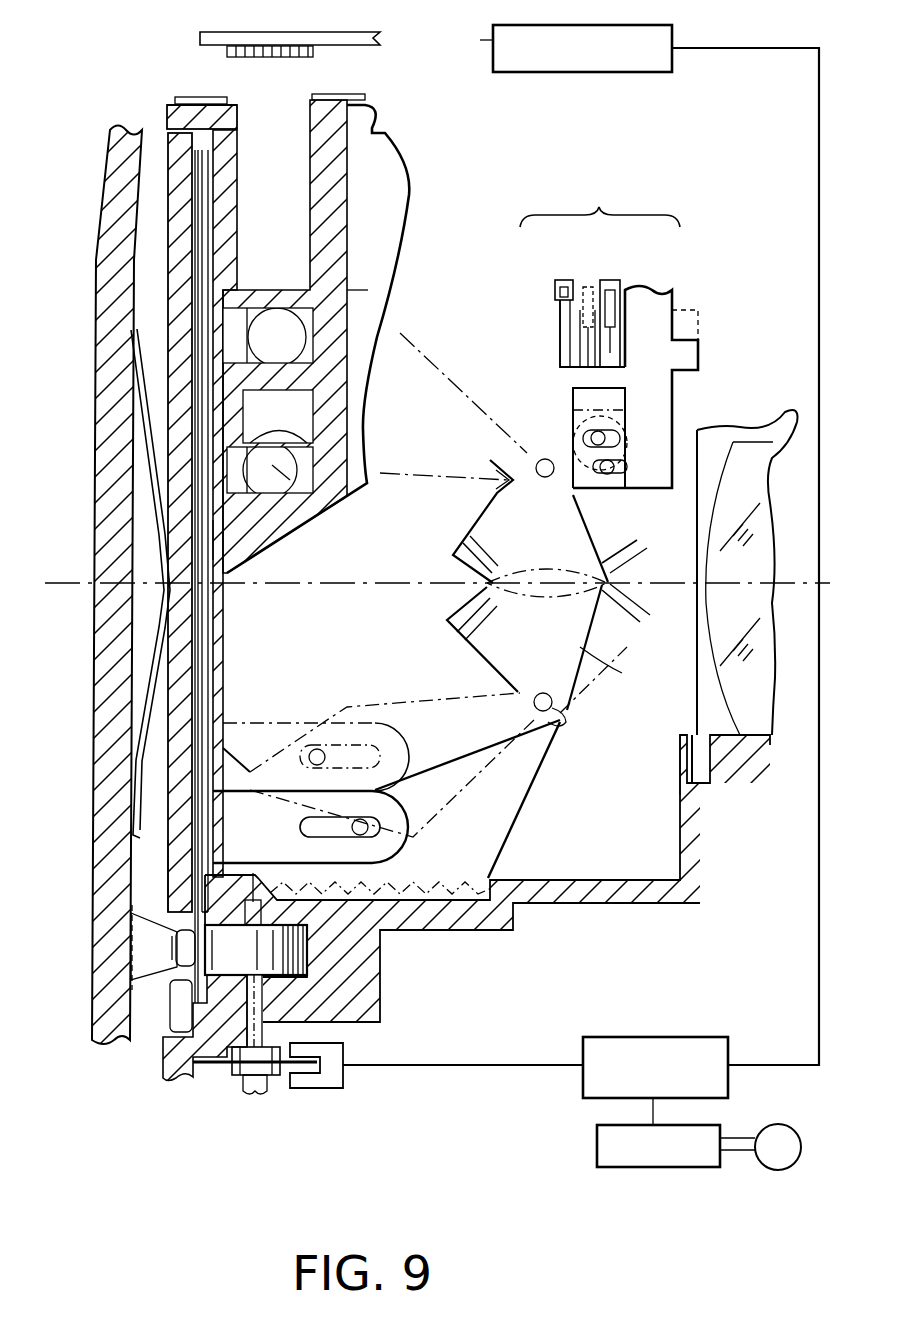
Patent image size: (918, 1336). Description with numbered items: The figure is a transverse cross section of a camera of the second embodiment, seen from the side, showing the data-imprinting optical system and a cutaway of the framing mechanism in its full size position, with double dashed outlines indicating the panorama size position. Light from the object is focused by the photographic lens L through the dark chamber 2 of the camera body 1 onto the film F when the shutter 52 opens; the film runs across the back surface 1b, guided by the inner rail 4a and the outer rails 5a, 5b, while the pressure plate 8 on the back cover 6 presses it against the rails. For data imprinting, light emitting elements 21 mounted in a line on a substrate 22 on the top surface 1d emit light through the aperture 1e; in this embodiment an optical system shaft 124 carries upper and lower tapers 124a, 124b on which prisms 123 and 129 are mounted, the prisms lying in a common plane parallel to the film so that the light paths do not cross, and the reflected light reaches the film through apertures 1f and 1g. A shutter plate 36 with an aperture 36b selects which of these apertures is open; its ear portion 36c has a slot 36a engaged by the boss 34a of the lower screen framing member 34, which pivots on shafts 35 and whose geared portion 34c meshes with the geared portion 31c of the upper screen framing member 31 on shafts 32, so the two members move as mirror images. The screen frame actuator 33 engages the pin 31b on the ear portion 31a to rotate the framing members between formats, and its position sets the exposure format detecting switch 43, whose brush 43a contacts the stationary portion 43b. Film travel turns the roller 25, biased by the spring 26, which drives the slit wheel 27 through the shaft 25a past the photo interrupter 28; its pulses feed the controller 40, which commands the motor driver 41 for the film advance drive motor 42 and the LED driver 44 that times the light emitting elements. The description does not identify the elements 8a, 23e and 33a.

The camera body 1 is at (368, 112).
The back surface 1b is at (165, 113).
The top surface 1d is at (173, 103).
The aperture 1e is at (232, 98).
The aperture 1f is at (237, 332).
The aperture 1g is at (220, 492).
The dark chamber 2 is at (247, 626).
The inner rail 4a is at (208, 282).
The outer rail 5a is at (166, 152).
The outer rail 5b is at (223, 1003).
The back cover 6 is at (100, 787).
The pressure plate 8 is at (165, 853).
The spring 8a is at (133, 690).
The light emitting elements 21 is at (313, 55).
The substrate 22 is at (248, 37).
The spacer 23e is at (235, 370).
The roller 25 is at (290, 955).
The shaft 25a is at (258, 1003).
The spring 26 is at (152, 950).
The slit wheel 27 is at (276, 1077).
The photo interrupter 28 is at (343, 1082).
The upper screen framing member 31 is at (480, 522).
The ear portion 31a is at (557, 462).
The pin 31b is at (615, 488).
The geared portion 31c is at (460, 556).
The shafts 32 is at (536, 465).
The screen frame actuator 33 is at (700, 347).
The roller 33a is at (560, 475).
The lower screen framing member 34 is at (605, 648).
The boss 34a is at (400, 790).
The geared portion 34c is at (460, 610).
The shafts 35 is at (548, 712).
The shutter plate 36 is at (212, 623).
The slot 36a is at (383, 862).
The aperture 36b is at (220, 537).
The ear portion 36c is at (257, 807).
The controller 40 is at (653, 1037).
The motor driver 41 is at (597, 1138).
The film advance drive motor 42 is at (781, 1123).
The exposure format detecting switch 43 is at (600, 204).
The brush 43a is at (536, 300).
The stationary portion 43b is at (607, 278).
The LED driver 44 is at (620, 68).
The shutter 52 is at (703, 748).
The prism 123 is at (347, 288).
The optical system shaft 124 is at (282, 178).
The upper taper 124a is at (380, 333).
The lower taper 124b is at (272, 465).
The prism 129 is at (290, 450).
The film F is at (215, 882).
The photographic lens L is at (750, 720).